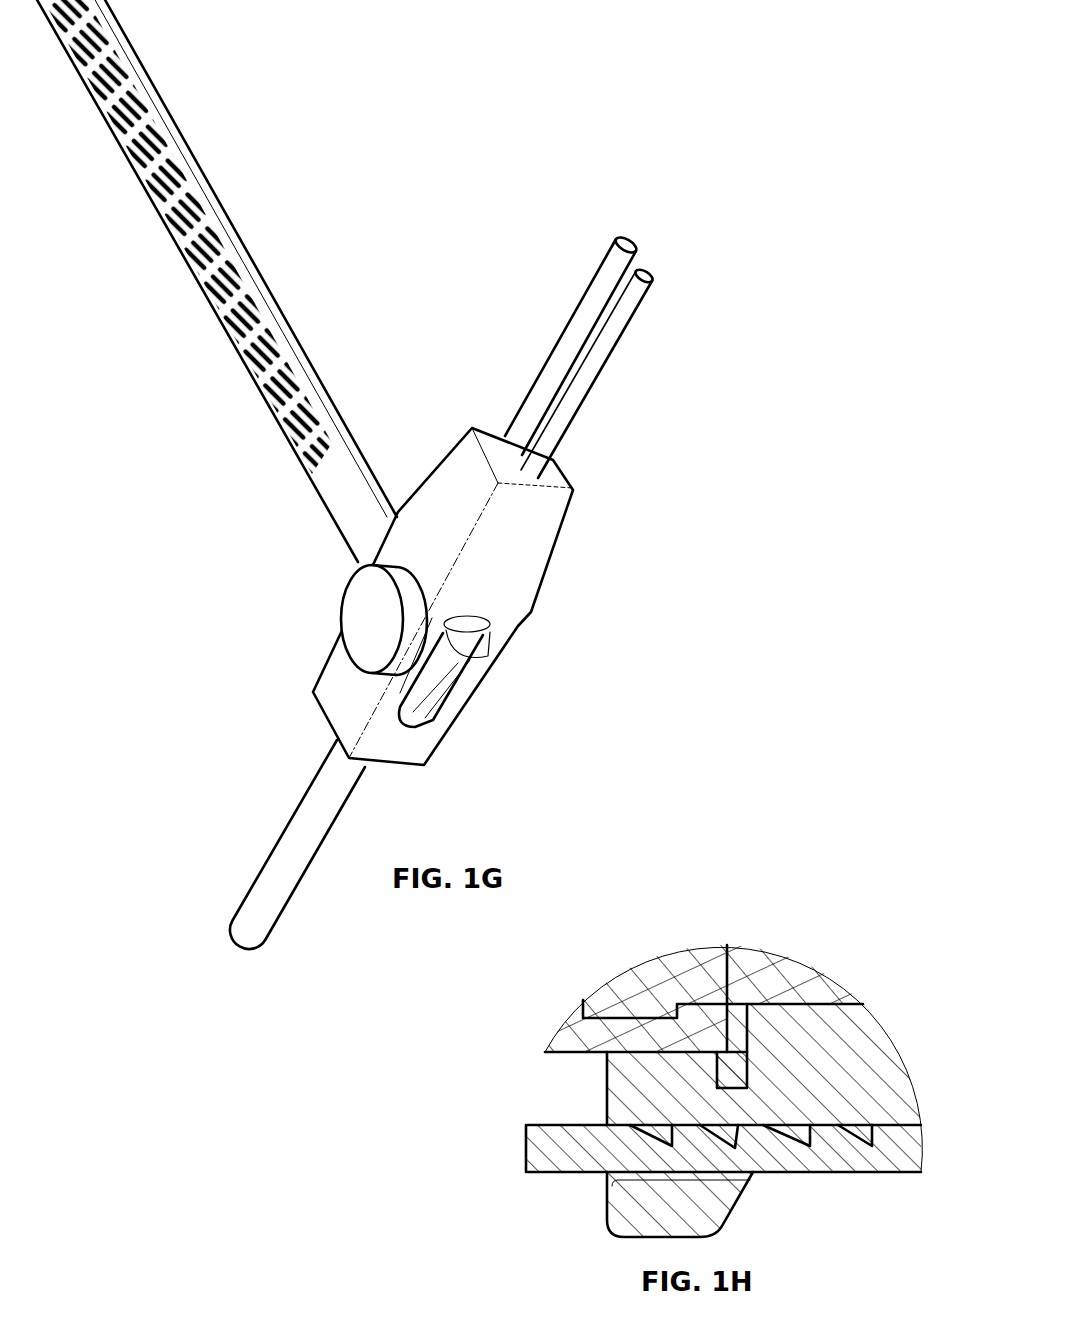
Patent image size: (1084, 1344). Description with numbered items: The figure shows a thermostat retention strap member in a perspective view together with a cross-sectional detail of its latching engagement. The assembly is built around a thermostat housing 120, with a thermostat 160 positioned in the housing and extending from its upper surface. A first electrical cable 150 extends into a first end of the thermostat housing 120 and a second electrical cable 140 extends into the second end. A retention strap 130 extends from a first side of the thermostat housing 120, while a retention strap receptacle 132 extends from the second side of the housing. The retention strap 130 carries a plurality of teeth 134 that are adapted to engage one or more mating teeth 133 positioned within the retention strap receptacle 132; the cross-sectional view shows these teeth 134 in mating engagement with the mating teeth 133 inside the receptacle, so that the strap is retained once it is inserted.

In FIG. 1G, the thermostat housing 120 is at (528, 538).
In FIG. 1G, the retention strap 130 is at (277, 315).
In FIG. 1H, the retention strap 130 is at (840, 1142).
In FIG. 1G, the retention strap receptacle 132 is at (462, 667).
In FIG. 1H, the retention strap receptacle 132 is at (697, 1212).
In FIG. 1H, the mating teeth 133 is at (731, 1130).
In FIG. 1H, the teeth 134 is at (722, 1128).
In FIG. 1G, the second electrical cable 140 is at (597, 362).
In FIG. 1G, the first electrical cable 150 is at (284, 851).
In FIG. 1G, the thermostat 160 is at (362, 614).